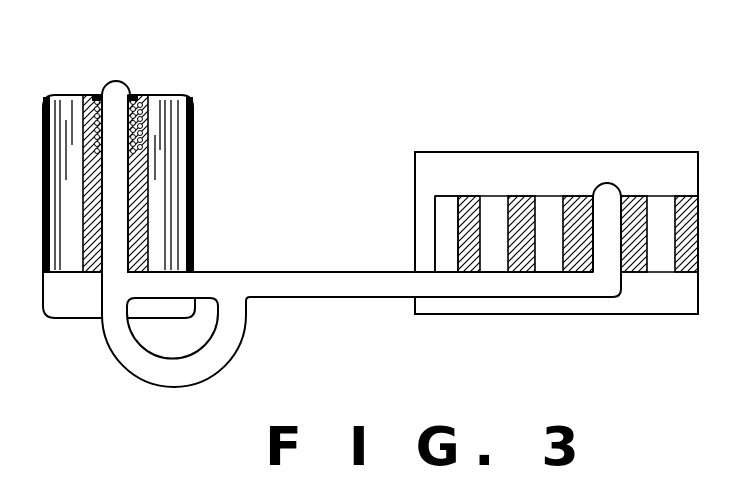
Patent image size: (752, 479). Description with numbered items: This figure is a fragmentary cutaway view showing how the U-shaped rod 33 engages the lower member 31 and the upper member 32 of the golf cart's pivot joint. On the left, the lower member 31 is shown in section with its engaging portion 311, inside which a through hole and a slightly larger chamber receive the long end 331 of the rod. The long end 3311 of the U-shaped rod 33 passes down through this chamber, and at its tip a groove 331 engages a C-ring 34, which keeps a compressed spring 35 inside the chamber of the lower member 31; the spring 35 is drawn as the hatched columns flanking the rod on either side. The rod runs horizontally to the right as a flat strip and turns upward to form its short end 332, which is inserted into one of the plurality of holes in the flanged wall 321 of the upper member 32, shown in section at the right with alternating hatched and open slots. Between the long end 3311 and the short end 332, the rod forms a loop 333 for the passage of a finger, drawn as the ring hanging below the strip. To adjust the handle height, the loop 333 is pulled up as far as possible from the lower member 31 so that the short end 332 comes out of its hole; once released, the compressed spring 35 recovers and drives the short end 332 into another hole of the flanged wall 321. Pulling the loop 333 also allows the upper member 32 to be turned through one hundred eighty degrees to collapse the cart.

The lower member 31 is at (43, 247).
The engaging portion 311 is at (44, 185).
The upper member 32 is at (658, 151).
The flanged wall 321 is at (450, 213).
The U-shaped rod 33 is at (343, 298).
The long end 331 is at (117, 162).
The long end 3311 is at (108, 94).
The short end 332 is at (607, 197).
The loop 333 is at (172, 386).
The C-ring 34 is at (97, 96).
The compressed spring 35 is at (133, 98).